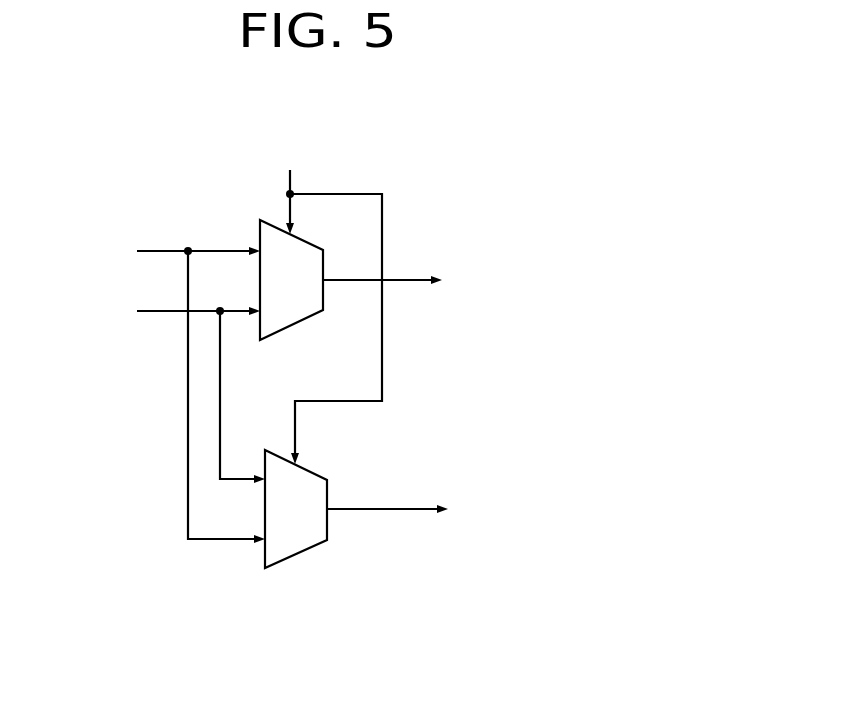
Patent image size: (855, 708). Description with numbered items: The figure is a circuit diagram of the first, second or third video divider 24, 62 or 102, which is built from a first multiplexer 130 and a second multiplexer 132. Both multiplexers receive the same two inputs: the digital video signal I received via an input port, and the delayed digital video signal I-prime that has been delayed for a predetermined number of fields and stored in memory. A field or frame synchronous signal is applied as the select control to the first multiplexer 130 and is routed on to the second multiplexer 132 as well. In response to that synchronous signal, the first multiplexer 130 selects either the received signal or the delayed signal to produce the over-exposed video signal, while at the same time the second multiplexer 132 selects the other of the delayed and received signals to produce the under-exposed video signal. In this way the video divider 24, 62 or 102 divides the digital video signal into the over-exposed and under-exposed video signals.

The first video divider 24 is at (408, 362).
The second video divider 62 is at (408, 362).
The third video divider 102 is at (472, 183).
The first multiplexer 130 is at (305, 318).
The second multiplexer 132 is at (308, 545).